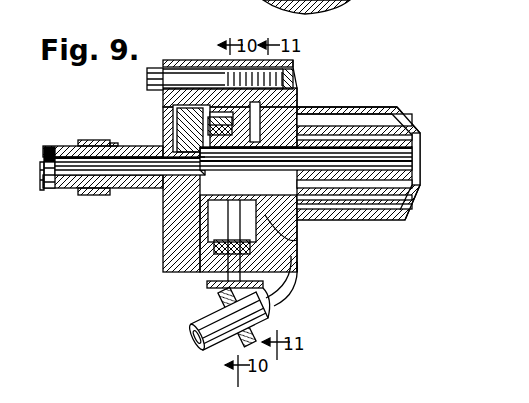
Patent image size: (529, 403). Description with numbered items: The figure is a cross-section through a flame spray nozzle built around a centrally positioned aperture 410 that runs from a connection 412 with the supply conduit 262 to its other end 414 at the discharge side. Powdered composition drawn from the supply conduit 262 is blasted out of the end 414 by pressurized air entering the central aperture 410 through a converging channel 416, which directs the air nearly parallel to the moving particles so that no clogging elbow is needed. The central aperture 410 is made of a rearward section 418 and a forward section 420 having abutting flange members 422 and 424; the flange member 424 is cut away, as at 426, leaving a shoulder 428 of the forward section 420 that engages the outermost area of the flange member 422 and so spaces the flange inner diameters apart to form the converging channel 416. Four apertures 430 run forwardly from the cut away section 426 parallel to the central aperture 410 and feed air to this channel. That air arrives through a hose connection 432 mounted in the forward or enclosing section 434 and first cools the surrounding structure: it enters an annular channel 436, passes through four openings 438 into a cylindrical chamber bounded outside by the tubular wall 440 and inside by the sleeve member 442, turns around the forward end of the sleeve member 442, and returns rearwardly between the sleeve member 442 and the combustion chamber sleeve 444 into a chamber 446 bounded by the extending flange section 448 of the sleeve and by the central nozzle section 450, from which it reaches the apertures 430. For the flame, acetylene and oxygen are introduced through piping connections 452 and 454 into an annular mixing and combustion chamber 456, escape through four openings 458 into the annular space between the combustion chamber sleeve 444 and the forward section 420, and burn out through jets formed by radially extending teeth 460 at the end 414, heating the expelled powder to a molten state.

The supply conduit 262 is at (42, 147).
The central aperture 410 is at (407, 150).
The connection 412 is at (88, 145).
The end of central aperture 414 is at (417, 177).
The converging channel 416 is at (163, 125).
The rearward section 418 is at (126, 192).
The forward section 420 is at (403, 170).
The flange member 422 is at (163, 258).
The flange member 424 is at (160, 275).
The cut away section 426 is at (162, 108).
The shoulder 428 is at (157, 97).
The apertures 430 is at (177, 60).
The hose connection 432 is at (290, 298).
The forward or enclosing section 434 is at (297, 248).
The annular channel 436 is at (298, 101).
The openings 438 is at (298, 106).
The tubular wall 440 is at (397, 107).
The sleeve member 442 is at (395, 118).
The combustion chamber sleeve 444 is at (402, 135).
The chamber 446 is at (297, 88).
The extending flange section 448 is at (297, 96).
The central nozzle section 450 is at (253, 58).
The piping connection 452 is at (191, 347).
The piping connection 454 is at (6, 300).
The annular mixing and combustion chamber 456 is at (218, 112).
The openings 458 is at (226, 118).
The radially extending teeth 460 is at (420, 188).